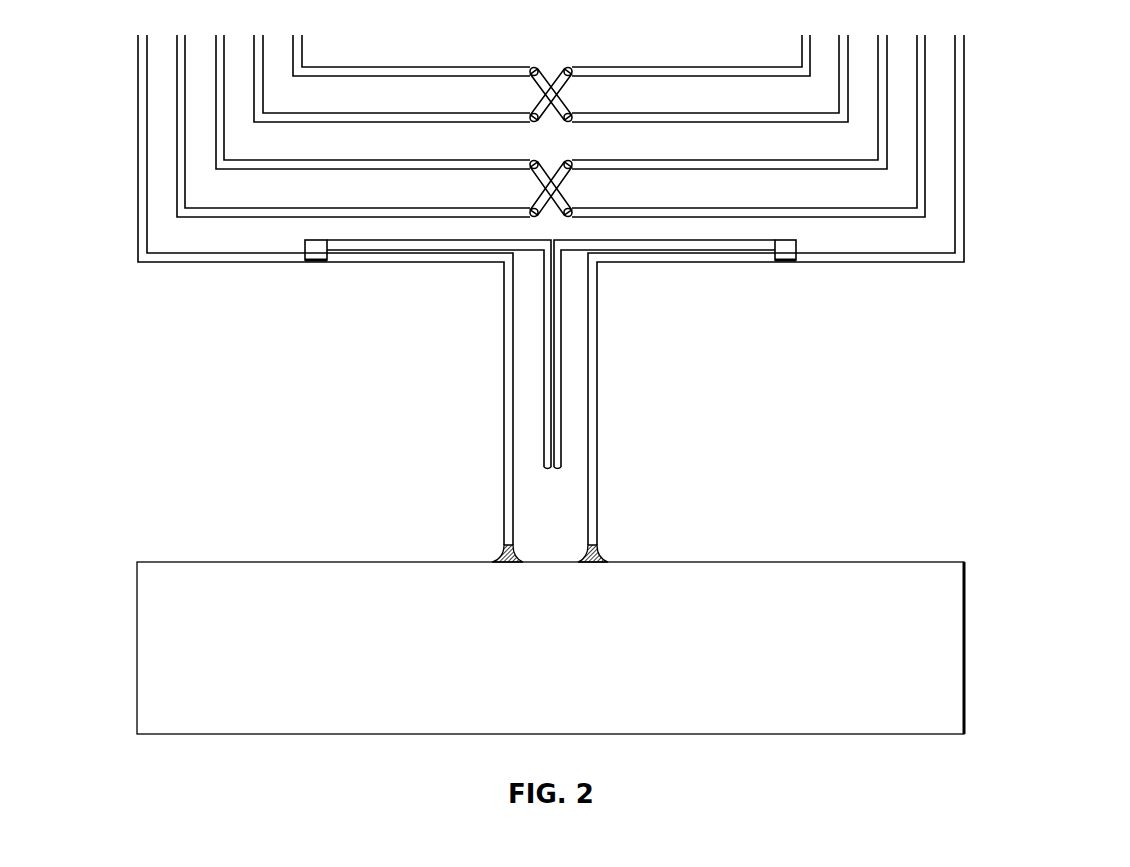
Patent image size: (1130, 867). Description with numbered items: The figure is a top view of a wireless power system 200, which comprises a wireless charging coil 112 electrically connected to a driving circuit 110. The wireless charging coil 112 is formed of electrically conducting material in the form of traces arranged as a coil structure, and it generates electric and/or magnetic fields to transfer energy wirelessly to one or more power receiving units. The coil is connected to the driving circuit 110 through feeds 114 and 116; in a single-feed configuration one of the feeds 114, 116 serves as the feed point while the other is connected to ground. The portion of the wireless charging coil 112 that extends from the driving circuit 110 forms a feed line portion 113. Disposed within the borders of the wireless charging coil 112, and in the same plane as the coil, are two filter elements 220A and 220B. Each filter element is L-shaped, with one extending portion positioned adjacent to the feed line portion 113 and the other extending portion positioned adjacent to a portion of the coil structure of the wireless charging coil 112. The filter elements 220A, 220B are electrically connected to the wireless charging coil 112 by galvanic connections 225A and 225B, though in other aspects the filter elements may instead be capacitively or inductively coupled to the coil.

The wireless power system 200 is at (1008, 60).
The driving circuit 110 is at (964, 636).
The wireless charging coil 112 is at (964, 193).
The feed line portion 113 is at (503, 466).
The feed 114 is at (510, 580).
The feed 116 is at (592, 580).
The filter element 220A is at (532, 383).
The filter element 220B is at (570, 363).
The galvanic connection 225A is at (313, 268).
The galvanic connection 225B is at (786, 268).